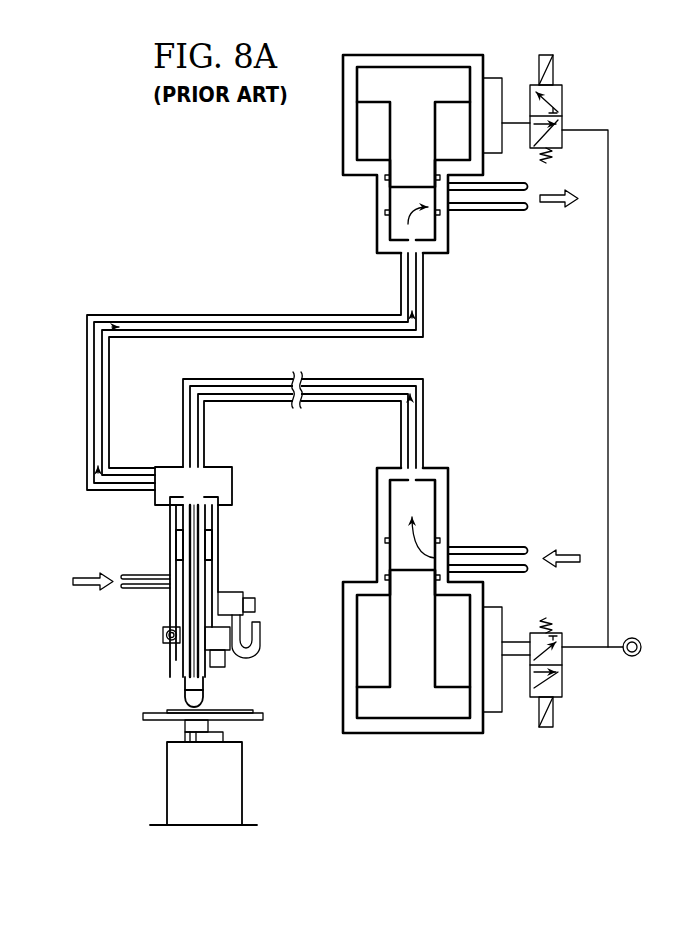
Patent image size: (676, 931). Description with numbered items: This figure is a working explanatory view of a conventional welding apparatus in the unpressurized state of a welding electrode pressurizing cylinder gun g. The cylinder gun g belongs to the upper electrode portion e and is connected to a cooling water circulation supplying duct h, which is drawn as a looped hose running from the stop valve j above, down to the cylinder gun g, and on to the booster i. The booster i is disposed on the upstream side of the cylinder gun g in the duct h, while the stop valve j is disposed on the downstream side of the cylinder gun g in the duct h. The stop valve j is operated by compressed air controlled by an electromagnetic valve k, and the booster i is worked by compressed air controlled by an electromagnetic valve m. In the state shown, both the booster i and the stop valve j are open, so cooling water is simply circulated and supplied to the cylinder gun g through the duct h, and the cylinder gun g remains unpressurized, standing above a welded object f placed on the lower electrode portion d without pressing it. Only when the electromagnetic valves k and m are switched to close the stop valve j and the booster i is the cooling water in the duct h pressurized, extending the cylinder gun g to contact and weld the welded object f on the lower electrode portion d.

The cooling water circulation supplying duct h is at (253, 314).
The stop valve j is at (471, 237).
The electromagnetic valve k is at (579, 105).
The booster i is at (489, 514).
The electromagnetic valve m is at (576, 688).
The upper electrode portion e is at (242, 537).
The welding electrode pressurizing cylinder gun g is at (165, 618).
The welded object f is at (249, 709).
The lower electrode portion d is at (245, 760).